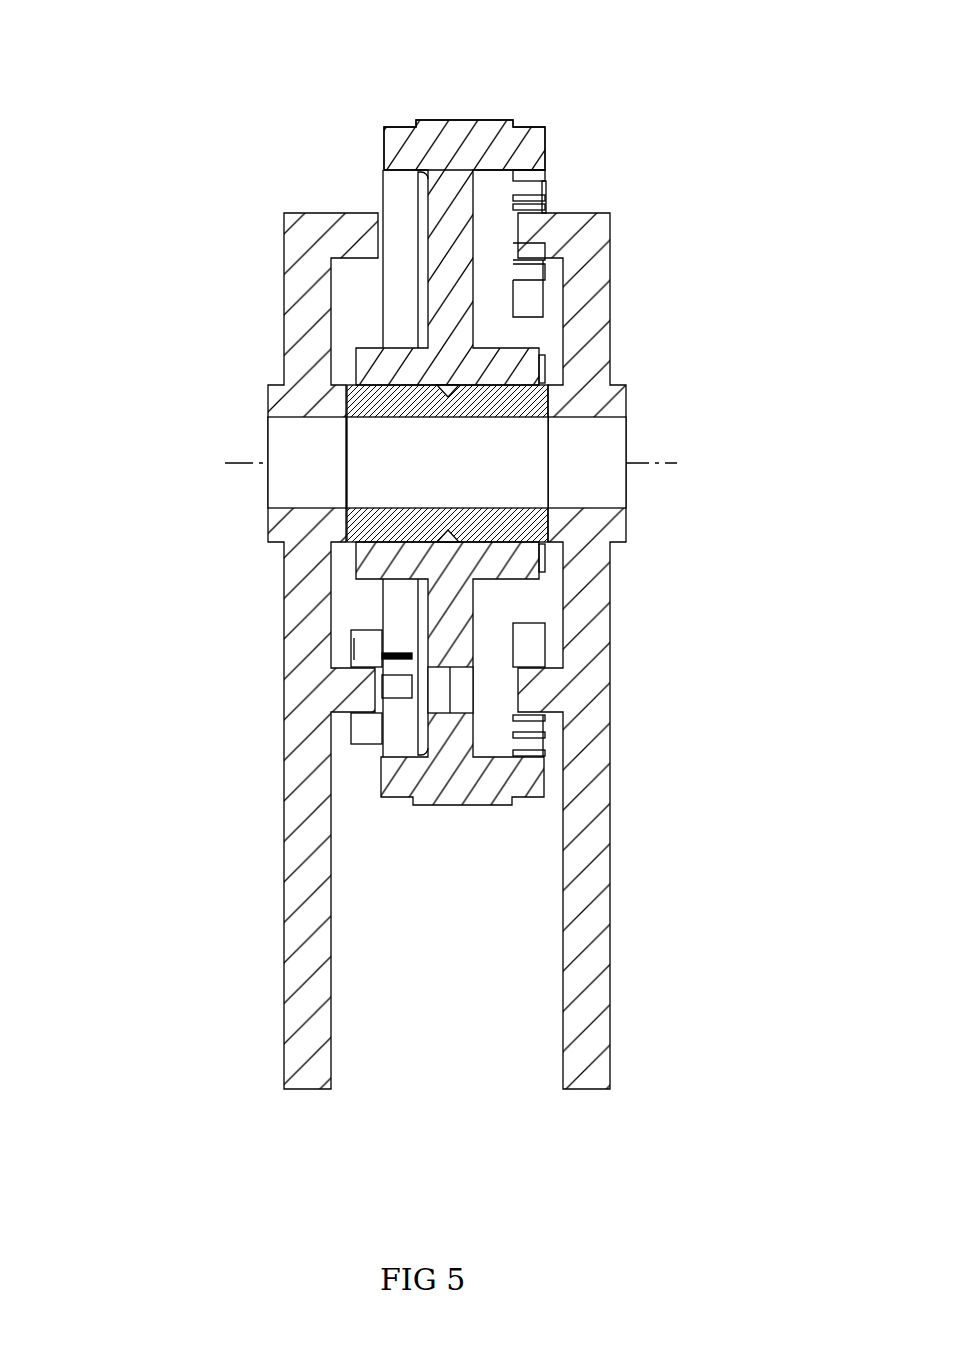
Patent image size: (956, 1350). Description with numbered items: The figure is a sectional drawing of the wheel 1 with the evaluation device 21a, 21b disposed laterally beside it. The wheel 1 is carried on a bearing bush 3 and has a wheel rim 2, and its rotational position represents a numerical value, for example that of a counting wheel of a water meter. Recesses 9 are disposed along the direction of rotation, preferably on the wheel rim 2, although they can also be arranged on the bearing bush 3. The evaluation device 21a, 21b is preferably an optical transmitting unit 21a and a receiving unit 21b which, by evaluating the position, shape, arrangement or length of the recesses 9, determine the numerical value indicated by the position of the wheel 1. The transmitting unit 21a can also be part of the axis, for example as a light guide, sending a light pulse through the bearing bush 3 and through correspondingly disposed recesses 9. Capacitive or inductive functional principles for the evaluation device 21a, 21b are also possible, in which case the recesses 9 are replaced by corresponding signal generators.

The wheel 1 is at (403, 100).
The wheel rim 2 is at (546, 141).
The bearing bush 3 is at (527, 521).
The recesses 9 is at (435, 690).
The optical transmitting unit 21a is at (285, 276).
The receiving unit 21b is at (597, 306).